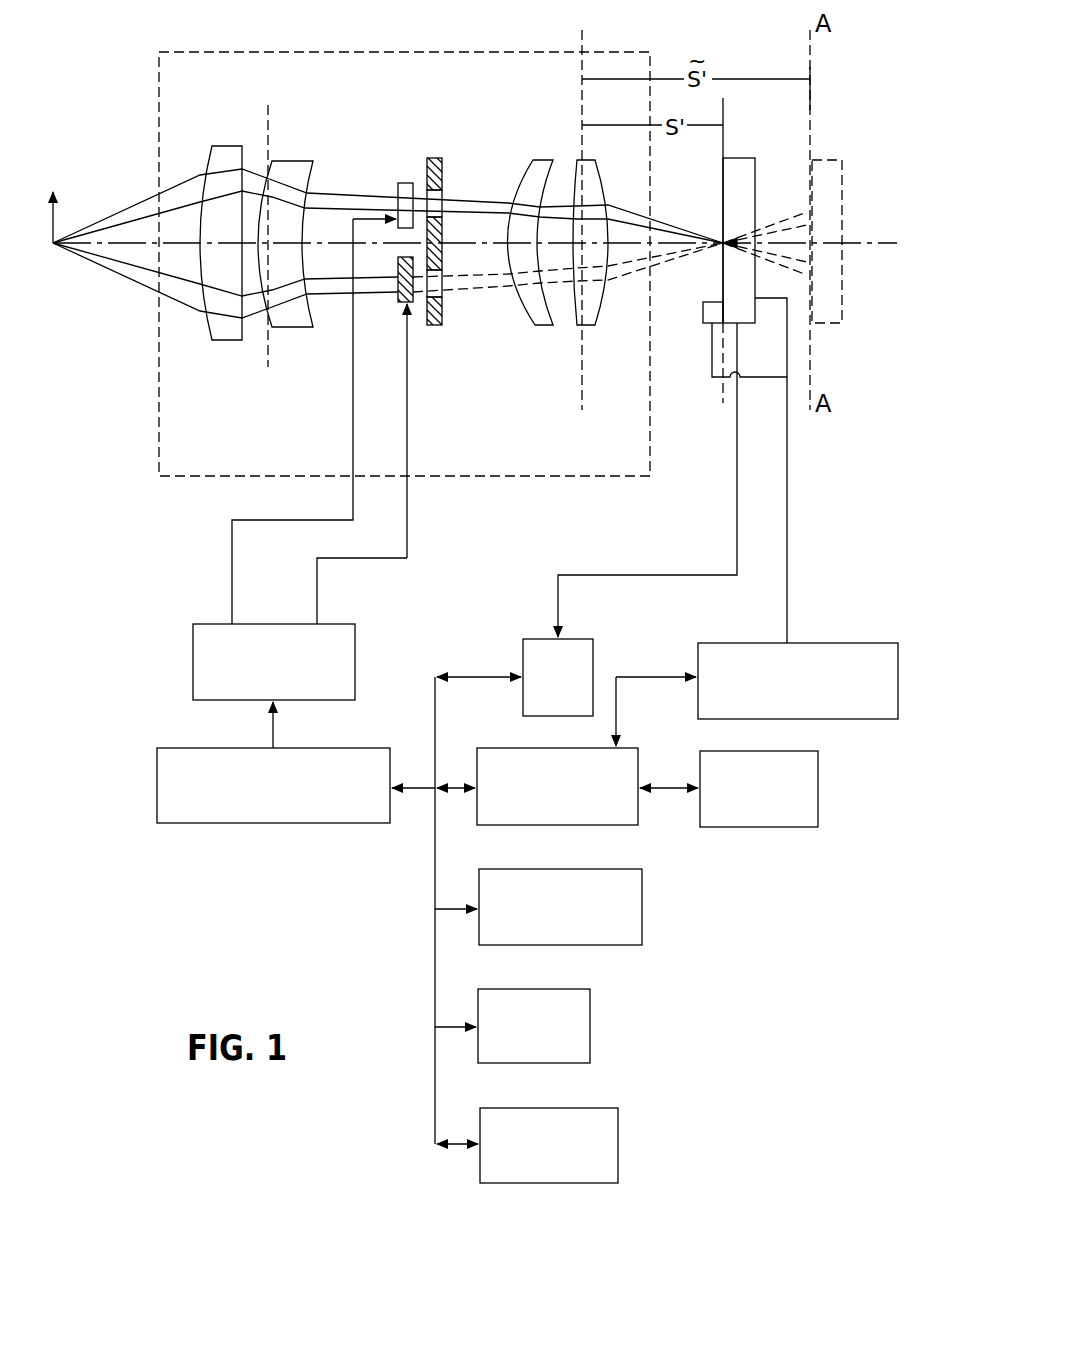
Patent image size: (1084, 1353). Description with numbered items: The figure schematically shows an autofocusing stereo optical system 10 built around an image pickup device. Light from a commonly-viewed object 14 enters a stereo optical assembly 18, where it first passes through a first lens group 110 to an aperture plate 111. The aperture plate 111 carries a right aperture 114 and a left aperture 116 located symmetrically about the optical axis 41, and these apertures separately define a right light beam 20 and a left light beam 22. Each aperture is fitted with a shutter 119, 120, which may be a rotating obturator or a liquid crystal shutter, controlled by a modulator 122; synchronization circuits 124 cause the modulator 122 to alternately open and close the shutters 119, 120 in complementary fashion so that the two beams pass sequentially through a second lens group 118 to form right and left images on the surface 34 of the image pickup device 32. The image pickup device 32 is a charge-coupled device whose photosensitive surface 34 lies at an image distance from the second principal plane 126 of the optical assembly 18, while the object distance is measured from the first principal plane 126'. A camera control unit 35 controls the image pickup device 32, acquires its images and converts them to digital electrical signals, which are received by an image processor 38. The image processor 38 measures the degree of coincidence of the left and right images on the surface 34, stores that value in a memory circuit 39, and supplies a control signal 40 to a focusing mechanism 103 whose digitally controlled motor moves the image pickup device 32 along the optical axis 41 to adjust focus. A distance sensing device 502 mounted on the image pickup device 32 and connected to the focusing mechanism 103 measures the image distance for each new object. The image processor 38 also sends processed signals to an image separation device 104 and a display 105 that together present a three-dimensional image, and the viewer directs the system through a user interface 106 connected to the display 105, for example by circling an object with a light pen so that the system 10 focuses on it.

The stereo optical system 10 is at (329, 899).
The object 14 is at (56, 217).
The stereo optical assembly 18 is at (400, 52).
The right light beam 20 is at (355, 194).
The left light beam 22 is at (344, 297).
The image pickup device 32 is at (737, 158).
The surface 34 is at (723, 180).
The camera control unit 35 is at (595, 650).
The image processor 38 is at (498, 747).
The memory circuit 39 is at (820, 790).
The control signal 40 is at (617, 715).
The optical axis 41 is at (870, 243).
The focusing mechanism 103 is at (836, 643).
The image separation device 104 is at (643, 898).
The display 105 is at (590, 1028).
The user interface 106 is at (618, 1143).
The first lens group 110 is at (241, 359).
The aperture plate 111 is at (468, 228).
The right aperture 114 is at (448, 189).
The left aperture 116 is at (452, 305).
The second lens group 118 is at (559, 336).
The shutter 119 is at (404, 183).
The shutter 120 is at (402, 304).
The modulator 122 is at (193, 664).
The synchronization circuits 124 is at (157, 787).
The second principal plane 126 is at (546, 224).
The first principal plane 126' is at (310, 249).
The distance sensing device 502 is at (703, 306).